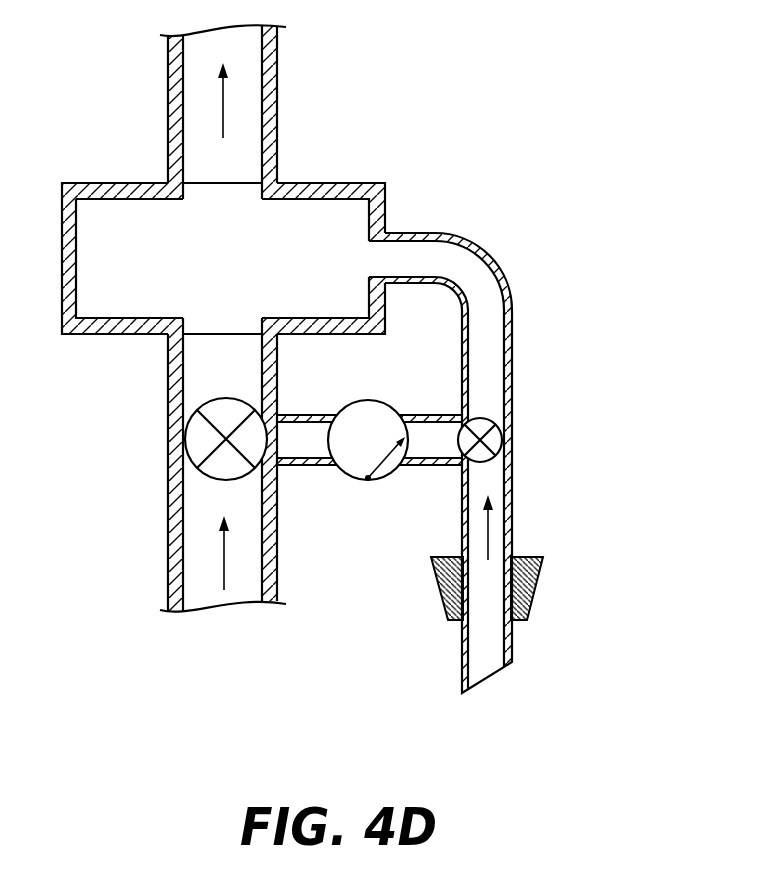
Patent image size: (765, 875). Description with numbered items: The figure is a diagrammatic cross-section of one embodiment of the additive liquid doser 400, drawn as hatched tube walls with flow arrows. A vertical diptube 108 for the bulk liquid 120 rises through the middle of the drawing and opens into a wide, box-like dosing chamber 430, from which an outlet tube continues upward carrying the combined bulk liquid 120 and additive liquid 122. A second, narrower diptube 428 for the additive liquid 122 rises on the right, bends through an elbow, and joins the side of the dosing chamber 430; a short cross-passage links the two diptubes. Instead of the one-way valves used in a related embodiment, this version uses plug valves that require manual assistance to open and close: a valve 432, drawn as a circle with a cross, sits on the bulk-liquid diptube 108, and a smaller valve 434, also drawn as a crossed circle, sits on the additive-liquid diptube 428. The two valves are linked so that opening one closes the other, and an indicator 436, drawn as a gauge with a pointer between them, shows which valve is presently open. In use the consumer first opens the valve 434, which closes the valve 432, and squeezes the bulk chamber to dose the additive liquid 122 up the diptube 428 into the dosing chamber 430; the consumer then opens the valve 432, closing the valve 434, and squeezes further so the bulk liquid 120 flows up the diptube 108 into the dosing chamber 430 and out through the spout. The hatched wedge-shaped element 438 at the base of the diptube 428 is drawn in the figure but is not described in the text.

The additive liquid doser 400 is at (333, 346).
The diptube 108 is at (168, 510).
The bulk liquid 120 is at (222, 100).
The additive liquid 122 is at (485, 532).
The diptube 428 is at (512, 338).
The dosing chamber 430 is at (128, 183).
The valve 432 is at (196, 397).
The valve 434 is at (500, 436).
The indicator 436 is at (392, 474).
The seal 438 is at (535, 587).